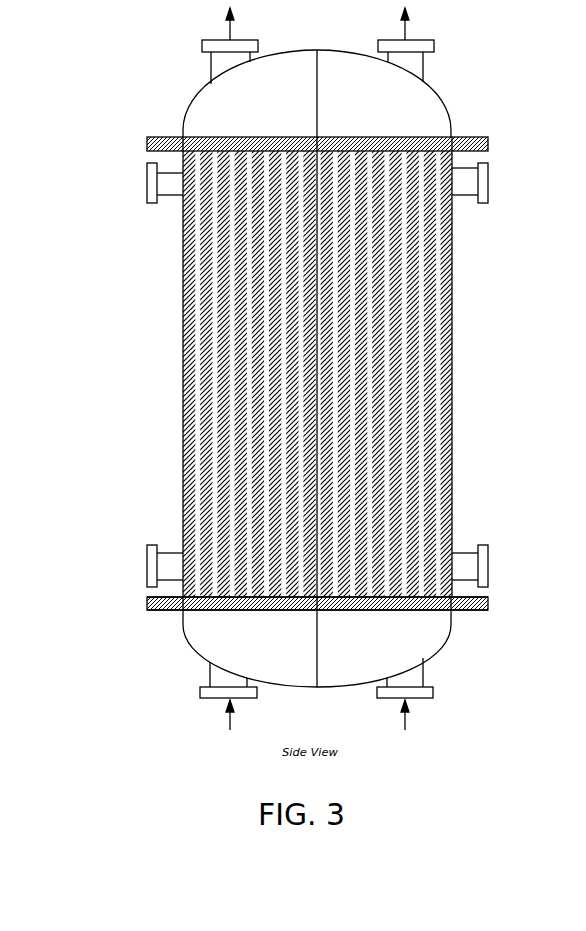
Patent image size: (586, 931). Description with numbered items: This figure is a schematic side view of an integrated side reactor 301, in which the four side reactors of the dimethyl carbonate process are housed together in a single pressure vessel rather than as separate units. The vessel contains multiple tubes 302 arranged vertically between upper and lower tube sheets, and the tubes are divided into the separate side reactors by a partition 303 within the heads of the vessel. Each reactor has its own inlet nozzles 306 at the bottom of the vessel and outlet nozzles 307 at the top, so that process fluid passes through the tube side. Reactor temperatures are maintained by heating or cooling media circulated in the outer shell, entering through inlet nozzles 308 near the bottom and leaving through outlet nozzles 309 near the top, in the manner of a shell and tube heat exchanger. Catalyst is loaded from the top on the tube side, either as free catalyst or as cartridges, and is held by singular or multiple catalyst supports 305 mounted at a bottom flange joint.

The integrated side reactor 301 is at (160, 276).
The tubes 302 is at (233, 367).
The partition 303 is at (585, 372).
The catalyst supports 305 is at (360, 600).
The inlet nozzles 306 is at (206, 680).
The outlet nozzles 307 is at (212, 62).
The shell inlet nozzles 308 is at (148, 568).
The shell outlet nozzles 309 is at (148, 172).